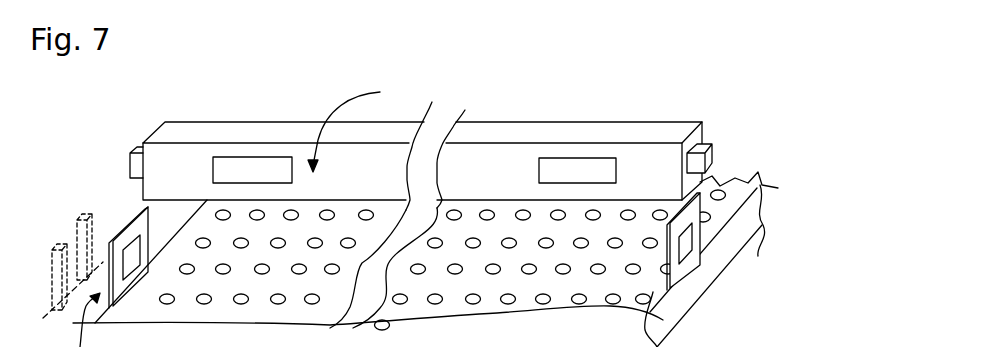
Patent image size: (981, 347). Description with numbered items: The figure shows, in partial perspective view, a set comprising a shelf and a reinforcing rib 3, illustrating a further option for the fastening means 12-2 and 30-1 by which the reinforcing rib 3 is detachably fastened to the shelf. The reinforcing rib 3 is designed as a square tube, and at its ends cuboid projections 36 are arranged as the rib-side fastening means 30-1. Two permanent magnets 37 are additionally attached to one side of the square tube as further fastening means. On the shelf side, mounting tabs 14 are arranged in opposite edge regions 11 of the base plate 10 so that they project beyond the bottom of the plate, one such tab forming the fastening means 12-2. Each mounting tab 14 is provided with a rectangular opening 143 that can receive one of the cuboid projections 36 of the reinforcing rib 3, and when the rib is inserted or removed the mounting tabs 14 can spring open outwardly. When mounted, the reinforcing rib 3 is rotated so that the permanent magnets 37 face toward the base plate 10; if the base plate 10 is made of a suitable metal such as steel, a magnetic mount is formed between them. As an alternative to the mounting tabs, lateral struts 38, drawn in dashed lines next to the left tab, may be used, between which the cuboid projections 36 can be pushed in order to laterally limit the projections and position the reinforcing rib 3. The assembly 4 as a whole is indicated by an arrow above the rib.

The reinforcing rib 3 is at (556, 120).
The sensor module assembly 4 is at (432, 105).
The base plate 10 is at (488, 303).
The edge region 11 is at (712, 285).
The fastening means 12-2 is at (745, 198).
The mounting tab 14 is at (129, 221).
The fastening means 30-1 is at (131, 140).
The cuboid projection 36 is at (703, 148).
The permanent magnet 37 is at (240, 170).
The lateral strut 38 is at (82, 218).
The rectangular opening 143 is at (684, 238).